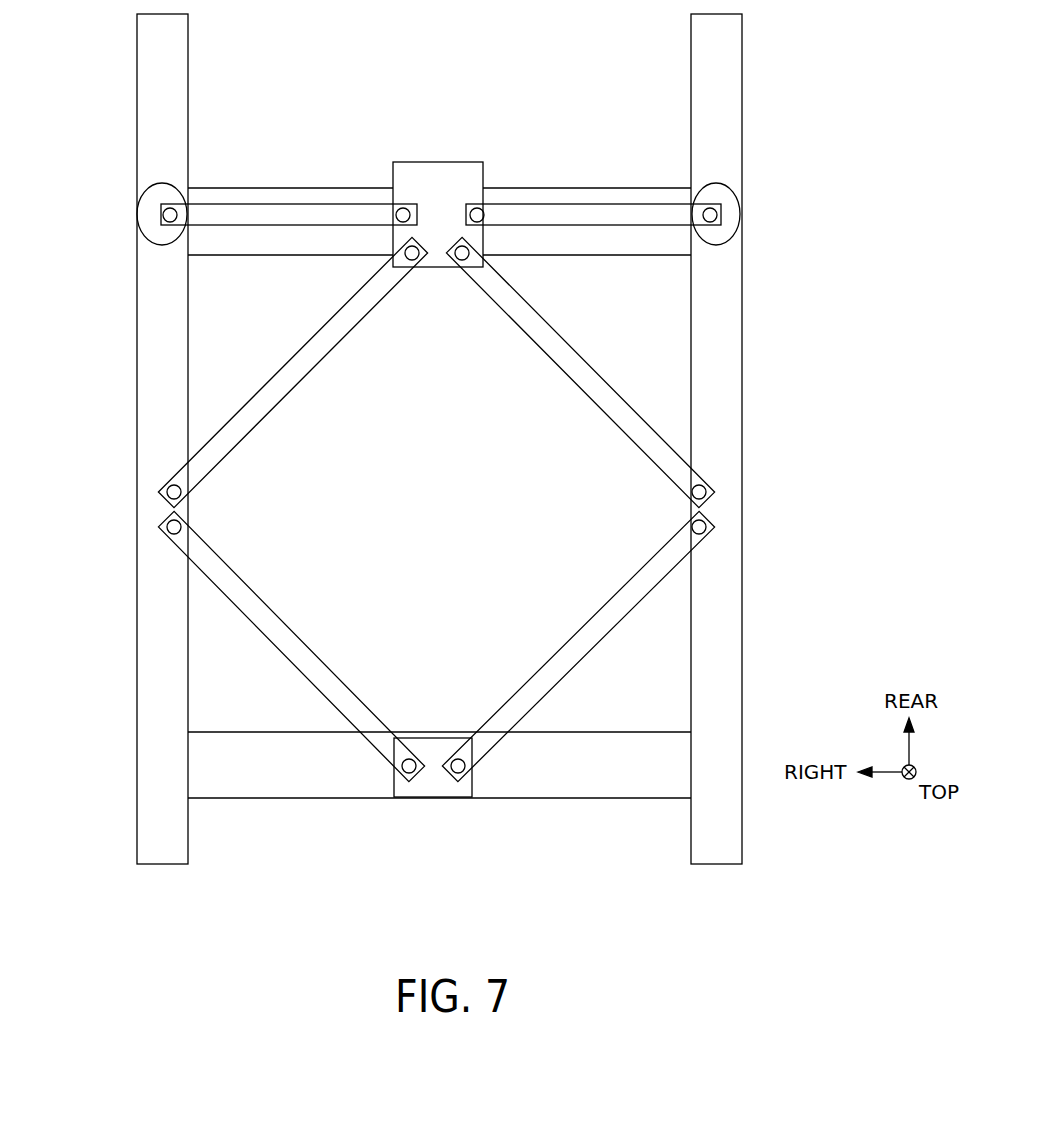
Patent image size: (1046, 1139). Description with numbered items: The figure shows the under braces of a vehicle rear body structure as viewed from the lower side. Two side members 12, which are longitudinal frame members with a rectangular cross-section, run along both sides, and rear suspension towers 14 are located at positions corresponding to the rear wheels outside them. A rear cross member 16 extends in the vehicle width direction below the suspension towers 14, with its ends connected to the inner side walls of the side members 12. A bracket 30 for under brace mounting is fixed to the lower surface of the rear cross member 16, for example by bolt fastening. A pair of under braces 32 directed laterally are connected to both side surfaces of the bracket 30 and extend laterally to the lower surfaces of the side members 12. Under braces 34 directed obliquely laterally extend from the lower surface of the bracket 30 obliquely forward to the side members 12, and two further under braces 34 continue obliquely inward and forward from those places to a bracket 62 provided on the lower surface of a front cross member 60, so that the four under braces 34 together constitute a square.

The side member 12 is at (172, 76).
The rear suspension tower 14 is at (157, 215).
The rear cross member 16 is at (322, 186).
The bracket 30 is at (445, 195).
The under brace directed laterally 32 is at (230, 218).
The under brace directed obliquely laterally 34 is at (304, 377).
The front cross member 60 is at (575, 768).
The bracket 62 is at (436, 772).